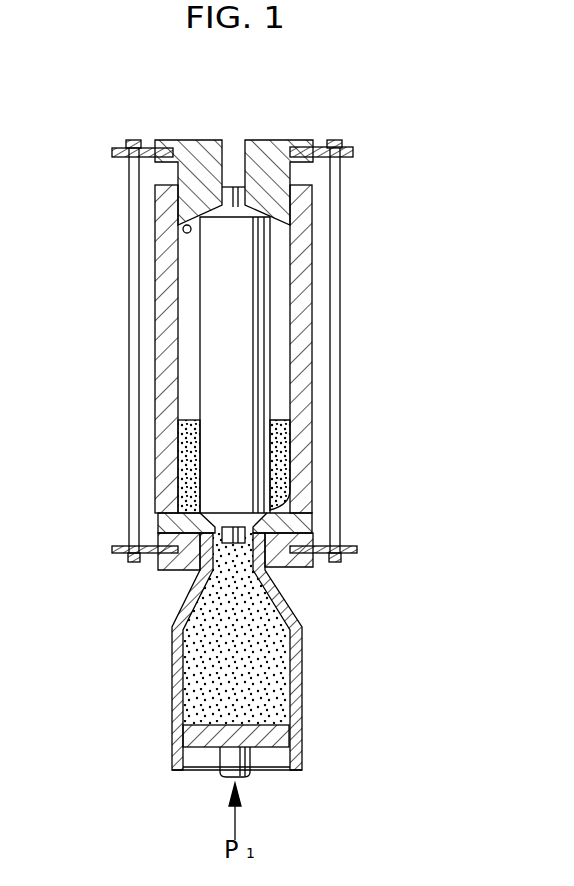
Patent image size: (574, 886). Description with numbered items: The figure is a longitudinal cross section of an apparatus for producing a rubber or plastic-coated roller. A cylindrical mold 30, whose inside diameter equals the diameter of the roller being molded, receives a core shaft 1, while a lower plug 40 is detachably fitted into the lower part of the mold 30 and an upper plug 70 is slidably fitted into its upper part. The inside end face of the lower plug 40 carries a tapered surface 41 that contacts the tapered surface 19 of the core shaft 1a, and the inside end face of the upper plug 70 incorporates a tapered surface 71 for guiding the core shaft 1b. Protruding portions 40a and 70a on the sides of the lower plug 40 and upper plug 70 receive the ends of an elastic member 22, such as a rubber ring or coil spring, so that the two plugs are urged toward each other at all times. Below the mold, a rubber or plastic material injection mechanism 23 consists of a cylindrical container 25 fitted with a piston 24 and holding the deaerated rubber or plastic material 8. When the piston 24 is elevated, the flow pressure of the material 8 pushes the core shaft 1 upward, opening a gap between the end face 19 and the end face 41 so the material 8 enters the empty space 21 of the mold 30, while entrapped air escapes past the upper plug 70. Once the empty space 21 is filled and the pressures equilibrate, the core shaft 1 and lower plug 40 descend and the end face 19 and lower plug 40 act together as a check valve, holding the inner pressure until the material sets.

The core shaft 1 is at (327, 347).
The core shaft 1a is at (262, 246).
The rod upper portion 1b is at (243, 190).
The rubber or plastic material 8 is at (256, 614).
The tapered surface (end face) of the core shaft 19 is at (272, 508).
The empty space of the mold 21 is at (278, 360).
The elastic member 22 is at (338, 245).
The rubber or plastic material injection mechanism 23 is at (292, 655).
The piston 24 is at (271, 751).
The cylindrical container 25 is at (302, 671).
The cylindrical mold 30 is at (300, 306).
The lower plug 40 is at (285, 537).
The protruding portion 40a is at (356, 553).
The tapered surface of the lower plug 41 is at (275, 495).
The upper plug 70 is at (263, 150).
The protruding portion 70a is at (352, 150).
The tapered surface 71 is at (185, 224).